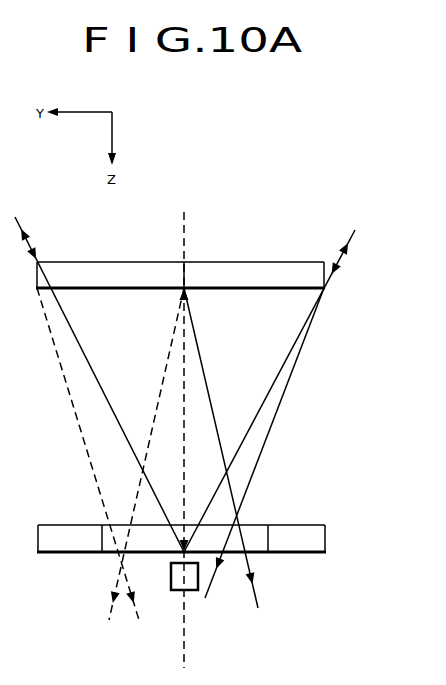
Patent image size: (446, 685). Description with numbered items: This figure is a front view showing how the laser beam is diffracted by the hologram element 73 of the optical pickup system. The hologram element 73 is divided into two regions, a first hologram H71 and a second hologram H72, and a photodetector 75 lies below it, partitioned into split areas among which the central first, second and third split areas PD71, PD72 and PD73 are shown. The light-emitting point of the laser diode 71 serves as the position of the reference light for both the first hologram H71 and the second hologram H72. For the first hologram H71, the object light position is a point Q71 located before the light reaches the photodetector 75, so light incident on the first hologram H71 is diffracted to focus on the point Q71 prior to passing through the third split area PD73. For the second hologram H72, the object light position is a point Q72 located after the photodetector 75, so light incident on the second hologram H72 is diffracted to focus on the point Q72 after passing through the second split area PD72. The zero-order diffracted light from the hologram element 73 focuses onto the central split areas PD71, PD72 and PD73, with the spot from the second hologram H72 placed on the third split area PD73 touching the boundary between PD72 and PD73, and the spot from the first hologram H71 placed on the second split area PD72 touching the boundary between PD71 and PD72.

The laser diode 71 is at (187, 577).
The hologram element 73 is at (312, 277).
The photodetector array 75 is at (325, 525).
The first hologram H71 is at (258, 268).
The second hologram H72 is at (112, 267).
The first split area PD71 is at (73, 533).
The second split area PD72 is at (150, 542).
The third split area PD73 is at (305, 535).
The point Q71 is at (236, 514).
The point Q72 is at (118, 567).